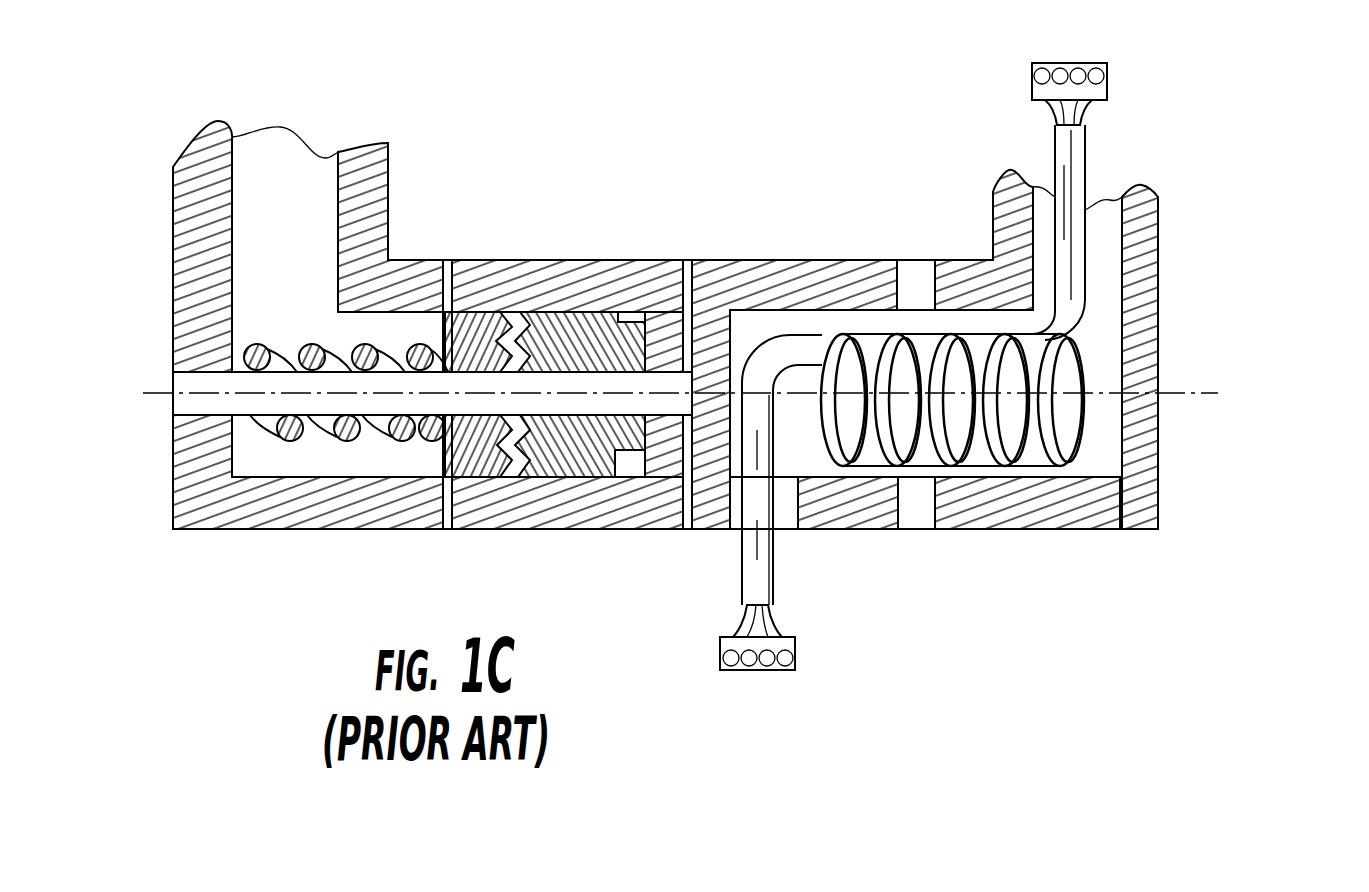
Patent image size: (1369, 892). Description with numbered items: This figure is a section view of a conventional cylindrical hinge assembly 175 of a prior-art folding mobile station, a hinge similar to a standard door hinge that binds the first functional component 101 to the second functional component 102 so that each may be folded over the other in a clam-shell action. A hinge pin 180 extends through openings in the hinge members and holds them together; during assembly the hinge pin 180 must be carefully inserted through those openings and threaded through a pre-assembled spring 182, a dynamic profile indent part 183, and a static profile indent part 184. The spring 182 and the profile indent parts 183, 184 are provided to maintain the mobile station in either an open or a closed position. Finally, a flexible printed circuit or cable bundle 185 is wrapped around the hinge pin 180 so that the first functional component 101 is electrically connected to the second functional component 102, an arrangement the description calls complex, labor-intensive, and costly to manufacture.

The hinge assembly 175 is at (1212, 511).
The first functional component 101 is at (845, 515).
The second functional component 102 is at (1138, 297).
The hinge pin 180 is at (198, 405).
The spring 182 is at (250, 345).
The profile indent part (dynamic) 183 is at (480, 322).
The profile indent part (static) 184 is at (582, 322).
The flexible printed circuit or cable bundle 185 is at (752, 548).